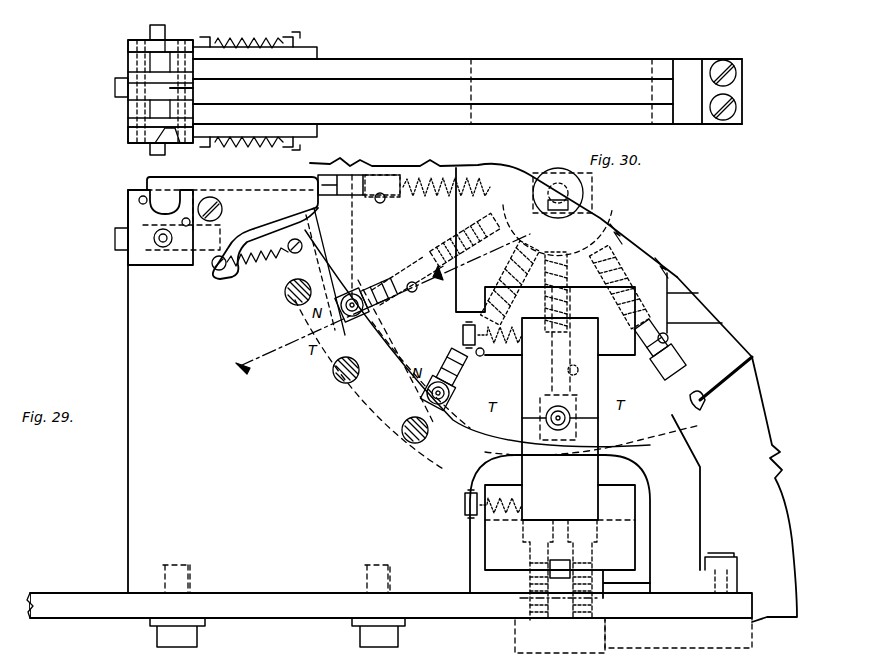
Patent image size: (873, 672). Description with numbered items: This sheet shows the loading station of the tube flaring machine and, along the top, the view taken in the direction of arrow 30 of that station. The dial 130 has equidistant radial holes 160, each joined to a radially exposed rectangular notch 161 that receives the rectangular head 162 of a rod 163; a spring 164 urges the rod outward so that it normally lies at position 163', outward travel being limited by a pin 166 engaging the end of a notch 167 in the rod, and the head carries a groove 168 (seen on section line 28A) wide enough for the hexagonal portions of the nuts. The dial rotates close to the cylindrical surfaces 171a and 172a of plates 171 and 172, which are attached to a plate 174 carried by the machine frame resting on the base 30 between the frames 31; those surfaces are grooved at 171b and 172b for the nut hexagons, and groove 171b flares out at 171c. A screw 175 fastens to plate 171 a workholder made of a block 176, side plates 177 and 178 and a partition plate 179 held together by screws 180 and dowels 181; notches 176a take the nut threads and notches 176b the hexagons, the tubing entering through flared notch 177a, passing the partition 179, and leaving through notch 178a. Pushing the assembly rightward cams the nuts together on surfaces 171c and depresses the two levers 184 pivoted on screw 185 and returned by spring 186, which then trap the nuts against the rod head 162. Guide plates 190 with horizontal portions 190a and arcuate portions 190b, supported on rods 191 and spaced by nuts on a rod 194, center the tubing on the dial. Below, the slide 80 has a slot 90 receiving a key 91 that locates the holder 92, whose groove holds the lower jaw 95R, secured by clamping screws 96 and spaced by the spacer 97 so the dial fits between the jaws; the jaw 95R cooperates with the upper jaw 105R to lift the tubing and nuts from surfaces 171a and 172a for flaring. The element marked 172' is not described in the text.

In FIG. 29, the section line 28A— 28A is at (367, 309).
In FIG. 29, the base 30 is at (483, 160).
In FIG. 29, the frame 31 (31L, 31R) 31 is at (472, 579).
In FIG. 29, the slide 80 is at (650, 583).
In FIG. 29, the slot 90 is at (552, 598).
In FIG. 29, the key 91 is at (572, 565).
In FIG. 29, the holder 92 is at (492, 550).
In FIG. 29, the right lower clamping jaw 95R is at (536, 428).
In FIG. 29, the clamping screw 96 is at (463, 503).
In FIG. 29, the spacer 97 is at (640, 472).
In FIG. 29, the right upper clamping jaw 105R is at (592, 380).
In FIG. 29, the dial 130 is at (728, 385).
In FIG. 29, the radially extending hole 160 is at (446, 245).
In FIG. 29, the rectangular notch 161 is at (378, 285).
In FIG. 29, the rod head 162 is at (388, 170).
In FIG. 29, the rod 163 is at (412, 271).
In FIG. 29, the outward position of rod 163' is at (715, 373).
In FIG. 29, the spring 164 is at (510, 275).
In FIG. 29, the pin 166 is at (380, 203).
In FIG. 29, the notch 167 is at (418, 290).
In FIG. 29, the groove 168 is at (698, 408).
In FIG. 30, the plate 171 is at (370, 62).
In FIG. 29, the plate 171 is at (128, 486).
In FIG. 29, the cylindrical surface 171a is at (452, 440).
In FIG. 30, the groove 171b is at (422, 88).
In FIG. 29, the groove 171b is at (392, 390).
In FIG. 30, the flared surface 171c is at (215, 77).
In FIG. 30, the plate 172 is at (697, 78).
In FIG. 29, the arm 172' is at (709, 504).
In FIG. 29, the cylindrical surface 172a is at (690, 438).
In FIG. 30, the groove 172b is at (608, 88).
In FIG. 29, the plate 174 is at (84, 596).
In FIG. 30, the screw 175 is at (115, 85).
In FIG. 29, the screw 175 is at (115, 239).
In FIG. 30, the block 176 is at (150, 70).
In FIG. 30, the notch 176a is at (168, 116).
In FIG. 30, the notch 176b is at (150, 80).
In FIG. 30, the side plate 177 is at (132, 135).
In FIG. 29, the side plate 177 is at (130, 260).
In FIG. 30, the flared notch 177a is at (160, 135).
In FIG. 30, the side plate 178 is at (138, 40).
In FIG. 30, the notch 178a is at (170, 45).
In FIG. 30, the partition plate 179 is at (188, 89).
In FIG. 30, the screw 180 is at (165, 20).
In FIG. 29, the screw 180 is at (163, 248).
In FIG. 29, the dowel 181 is at (142, 195).
In FIG. 30, the lever 184 is at (300, 50).
In FIG. 29, the lever 184 is at (316, 208).
In FIG. 30, the screw 185 is at (210, 150).
In FIG. 29, the screw 185 is at (222, 211).
In FIG. 29, the spring 186 is at (290, 256).
In FIG. 29, the guide plate 190 is at (390, 440).
In FIG. 30, the horizontal portion 190a is at (285, 140).
In FIG. 29, the arcuate portion 190b is at (298, 305).
In FIG. 29, the rod 191 is at (298, 306).
In FIG. 29, the rod 194 is at (337, 383).